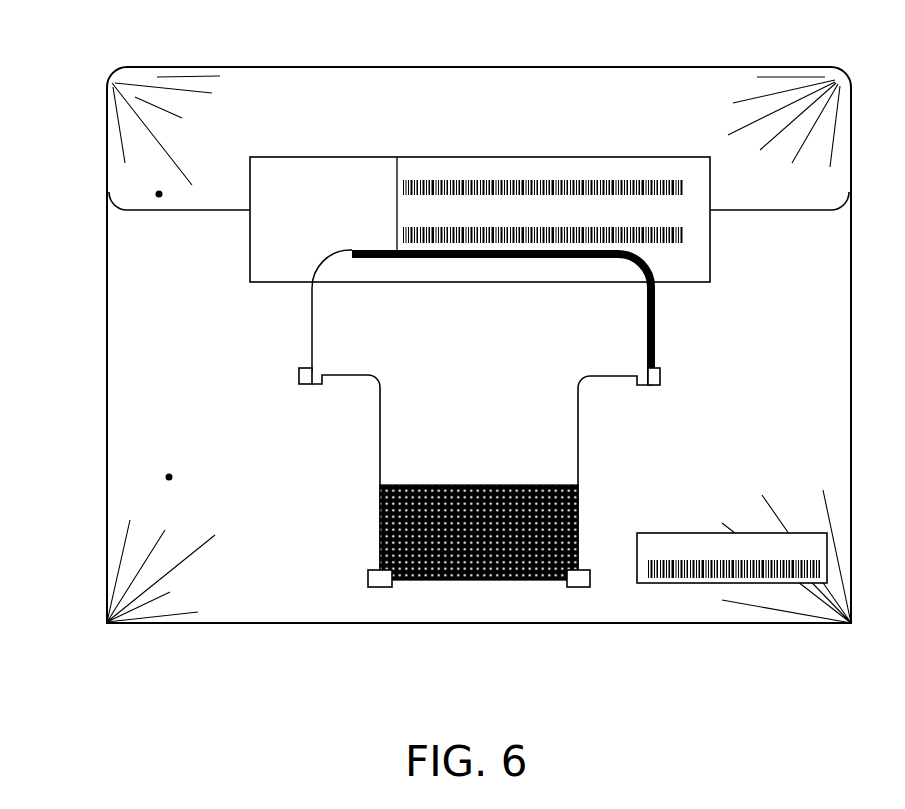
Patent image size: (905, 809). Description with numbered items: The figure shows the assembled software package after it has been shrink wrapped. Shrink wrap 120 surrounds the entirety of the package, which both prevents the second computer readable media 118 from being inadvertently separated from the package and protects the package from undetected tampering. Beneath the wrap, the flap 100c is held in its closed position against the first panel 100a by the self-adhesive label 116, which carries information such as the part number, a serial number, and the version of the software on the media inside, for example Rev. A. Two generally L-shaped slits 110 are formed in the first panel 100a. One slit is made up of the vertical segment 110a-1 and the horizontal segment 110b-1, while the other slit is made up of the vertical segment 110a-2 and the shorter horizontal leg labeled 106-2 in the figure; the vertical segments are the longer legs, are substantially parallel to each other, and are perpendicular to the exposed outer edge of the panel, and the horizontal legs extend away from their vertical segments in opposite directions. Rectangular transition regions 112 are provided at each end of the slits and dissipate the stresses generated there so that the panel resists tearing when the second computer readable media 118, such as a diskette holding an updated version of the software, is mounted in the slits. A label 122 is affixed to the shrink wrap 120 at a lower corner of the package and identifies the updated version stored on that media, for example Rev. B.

The shrink wrap 120 is at (730, 82).
The flap 100c is at (159, 194).
The first panel 100a is at (169, 477).
The self-adhesive label 116 is at (262, 270).
The second computer readable media 118 is at (615, 323).
The left mounting tab 106-2 is at (343, 376).
The horizontal segment 110b-1 is at (600, 377).
The vertical segment 110a-2 is at (380, 490).
The vertical segment 110a-1 is at (580, 440).
The slit 110 is at (564, 587).
The transition region 112 is at (299, 376).
The label 122 is at (665, 570).